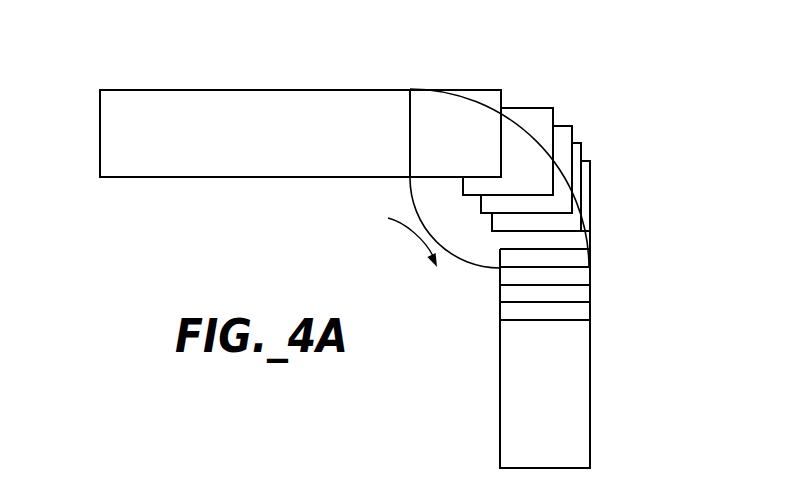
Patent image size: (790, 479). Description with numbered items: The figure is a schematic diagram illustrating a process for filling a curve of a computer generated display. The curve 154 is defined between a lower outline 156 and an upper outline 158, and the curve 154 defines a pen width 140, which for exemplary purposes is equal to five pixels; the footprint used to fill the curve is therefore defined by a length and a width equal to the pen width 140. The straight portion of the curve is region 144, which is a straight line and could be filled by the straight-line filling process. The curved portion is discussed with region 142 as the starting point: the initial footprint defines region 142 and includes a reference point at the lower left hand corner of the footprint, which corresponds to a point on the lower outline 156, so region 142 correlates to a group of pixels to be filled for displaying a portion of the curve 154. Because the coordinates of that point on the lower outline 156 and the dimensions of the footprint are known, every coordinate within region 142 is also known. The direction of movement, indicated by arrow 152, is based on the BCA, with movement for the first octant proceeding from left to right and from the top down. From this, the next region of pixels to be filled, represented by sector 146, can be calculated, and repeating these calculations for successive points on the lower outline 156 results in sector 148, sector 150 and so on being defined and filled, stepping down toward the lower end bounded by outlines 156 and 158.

The pen width 140 is at (83, 95).
The region 142 is at (477, 95).
The region 144 is at (408, 194).
The sector 146 is at (528, 118).
The sector 148 is at (562, 143).
The sector 150 is at (473, 223).
The arrow 152 is at (400, 244).
The curve 154 is at (233, 80).
The lower outline 156 is at (500, 430).
The upper outline 158 is at (591, 430).